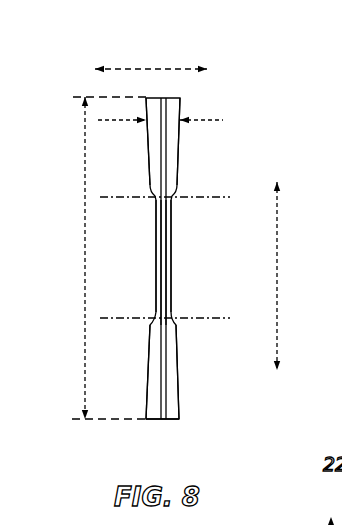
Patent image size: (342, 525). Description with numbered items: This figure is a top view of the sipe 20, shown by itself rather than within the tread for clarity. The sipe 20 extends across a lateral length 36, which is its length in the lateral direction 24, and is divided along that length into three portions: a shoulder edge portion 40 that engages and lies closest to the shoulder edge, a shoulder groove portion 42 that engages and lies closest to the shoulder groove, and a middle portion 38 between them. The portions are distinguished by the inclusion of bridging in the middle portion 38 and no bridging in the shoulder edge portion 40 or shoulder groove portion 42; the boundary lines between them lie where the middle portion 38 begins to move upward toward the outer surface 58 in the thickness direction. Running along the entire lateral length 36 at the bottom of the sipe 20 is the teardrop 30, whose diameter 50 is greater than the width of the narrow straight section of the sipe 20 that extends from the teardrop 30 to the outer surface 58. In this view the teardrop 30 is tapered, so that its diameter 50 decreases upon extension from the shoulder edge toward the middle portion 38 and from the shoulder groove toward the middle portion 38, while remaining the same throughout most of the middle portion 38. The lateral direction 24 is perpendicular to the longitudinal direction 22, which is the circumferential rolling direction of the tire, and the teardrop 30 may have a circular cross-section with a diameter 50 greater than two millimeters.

The sipe 20 is at (226, 67).
The longitudinal direction 22 is at (130, 68).
The lateral direction 24 is at (278, 253).
The teardrop 30 is at (153, 421).
The lateral length 36 is at (85, 268).
The middle portion 38 is at (176, 258).
The shoulder edge portion 40 is at (172, 395).
The shoulder groove portion 42 is at (176, 146).
The diameter 50 is at (213, 120).
The outer surface 58 is at (160, 327).